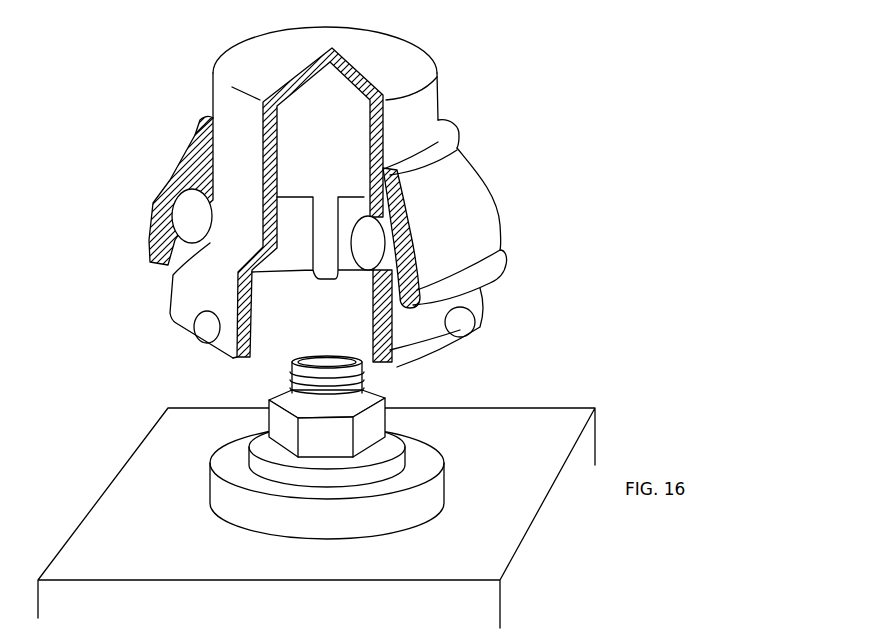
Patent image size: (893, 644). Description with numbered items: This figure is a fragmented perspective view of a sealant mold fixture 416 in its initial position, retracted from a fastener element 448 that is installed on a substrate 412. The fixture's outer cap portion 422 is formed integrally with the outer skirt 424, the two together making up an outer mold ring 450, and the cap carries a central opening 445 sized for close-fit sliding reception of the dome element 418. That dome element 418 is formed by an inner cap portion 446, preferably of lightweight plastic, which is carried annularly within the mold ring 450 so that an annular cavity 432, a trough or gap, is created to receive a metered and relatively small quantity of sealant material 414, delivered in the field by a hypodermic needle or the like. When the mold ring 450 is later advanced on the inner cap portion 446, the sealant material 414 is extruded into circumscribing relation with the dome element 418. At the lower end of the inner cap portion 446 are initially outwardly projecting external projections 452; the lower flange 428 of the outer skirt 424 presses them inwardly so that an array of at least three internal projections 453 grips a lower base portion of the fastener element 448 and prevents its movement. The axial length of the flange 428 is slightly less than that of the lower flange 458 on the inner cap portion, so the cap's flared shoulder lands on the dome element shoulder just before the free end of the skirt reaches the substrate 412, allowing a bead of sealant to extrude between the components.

The substrate 412 is at (555, 431).
The sealant material 414 is at (370, 216).
The sealant mold fixture 416 is at (142, 217).
The dome element 418 is at (255, 45).
The outer cap portion 422 is at (458, 157).
The outer skirt 424 is at (465, 217).
The lower flange 428 is at (152, 258).
The annular cavity 432 is at (168, 272).
The central opening 445 is at (438, 140).
The inner cap portion 446 is at (197, 302).
The fastener element 448 is at (407, 427).
The outer mold ring 450 is at (173, 157).
The external projections 452 is at (468, 330).
The internal projections 453 is at (313, 277).
The lower flange 458 is at (233, 362).